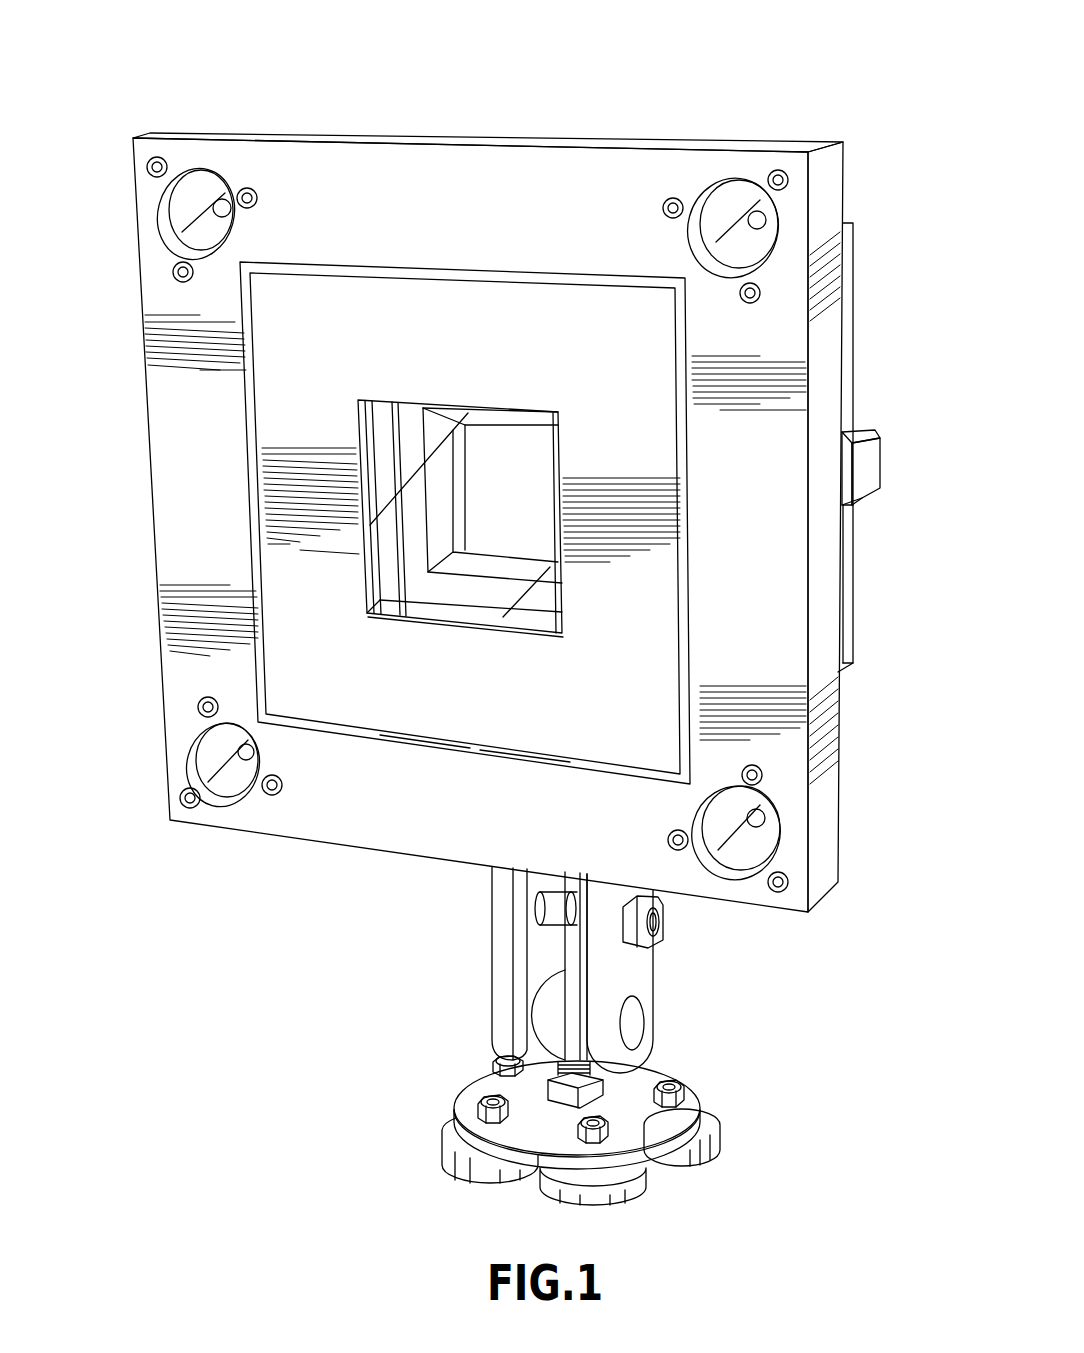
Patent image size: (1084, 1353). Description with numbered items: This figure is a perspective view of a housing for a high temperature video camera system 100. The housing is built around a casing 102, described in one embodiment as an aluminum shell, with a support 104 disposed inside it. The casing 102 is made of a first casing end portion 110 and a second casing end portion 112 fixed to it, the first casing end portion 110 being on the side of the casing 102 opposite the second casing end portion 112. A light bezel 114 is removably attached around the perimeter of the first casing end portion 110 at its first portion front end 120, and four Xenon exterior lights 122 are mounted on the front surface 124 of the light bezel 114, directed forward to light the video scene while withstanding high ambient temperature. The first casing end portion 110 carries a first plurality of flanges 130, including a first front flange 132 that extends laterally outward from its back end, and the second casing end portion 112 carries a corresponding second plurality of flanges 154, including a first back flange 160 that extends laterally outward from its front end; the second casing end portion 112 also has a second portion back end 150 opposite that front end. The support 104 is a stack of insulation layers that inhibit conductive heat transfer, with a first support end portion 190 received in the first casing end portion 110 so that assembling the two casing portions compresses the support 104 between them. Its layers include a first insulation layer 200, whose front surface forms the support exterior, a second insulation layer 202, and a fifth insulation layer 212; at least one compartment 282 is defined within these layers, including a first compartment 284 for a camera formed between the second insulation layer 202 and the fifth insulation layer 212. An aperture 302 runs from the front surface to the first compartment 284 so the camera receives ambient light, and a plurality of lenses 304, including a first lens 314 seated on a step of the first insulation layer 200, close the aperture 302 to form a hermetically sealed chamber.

The high temperature video camera system 100 is at (502, 602).
The light bezel 114 is at (377, 192).
The casing 102 is at (465, 504).
The exterior lights 122 is at (182, 202).
The second casing end portion 112 is at (899, 447).
The second plurality of flanges 154 is at (901, 434).
The first back flange 160 is at (877, 453).
The first plurality of flanges 130 is at (900, 535).
The first front flange 132 is at (853, 497).
The second portion back end 150 is at (852, 627).
The first support end portion 190 is at (341, 538).
The fifth insulation layer 212 is at (522, 480).
The compartment 282 is at (297, 515).
The first compartment 284 is at (477, 468).
The first insulation layer 200 is at (385, 575).
The support 104 is at (375, 600).
The second insulation layer 202 is at (428, 592).
The aperture 302 is at (477, 617).
The plurality of lenses 304 is at (502, 675).
The first lens 314 is at (500, 613).
The first casing end portion 110 is at (430, 683).
The first portion front end 120 is at (532, 688).
The front surface 124 is at (783, 760).